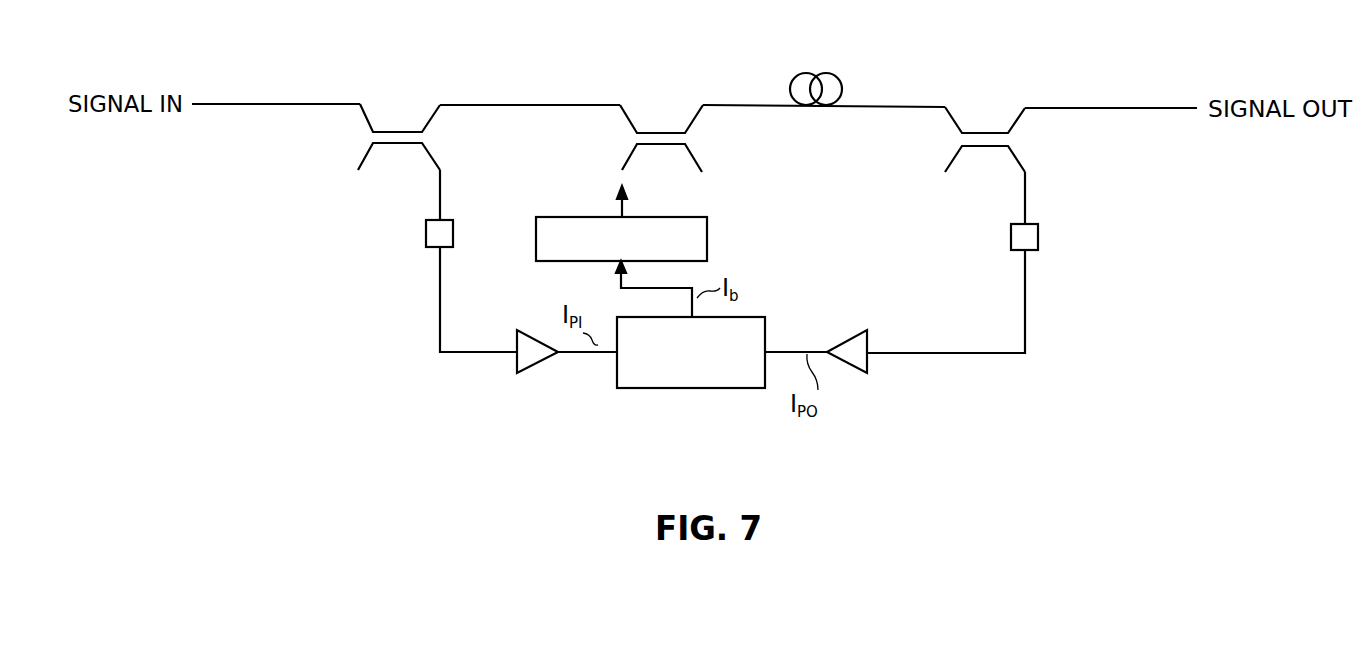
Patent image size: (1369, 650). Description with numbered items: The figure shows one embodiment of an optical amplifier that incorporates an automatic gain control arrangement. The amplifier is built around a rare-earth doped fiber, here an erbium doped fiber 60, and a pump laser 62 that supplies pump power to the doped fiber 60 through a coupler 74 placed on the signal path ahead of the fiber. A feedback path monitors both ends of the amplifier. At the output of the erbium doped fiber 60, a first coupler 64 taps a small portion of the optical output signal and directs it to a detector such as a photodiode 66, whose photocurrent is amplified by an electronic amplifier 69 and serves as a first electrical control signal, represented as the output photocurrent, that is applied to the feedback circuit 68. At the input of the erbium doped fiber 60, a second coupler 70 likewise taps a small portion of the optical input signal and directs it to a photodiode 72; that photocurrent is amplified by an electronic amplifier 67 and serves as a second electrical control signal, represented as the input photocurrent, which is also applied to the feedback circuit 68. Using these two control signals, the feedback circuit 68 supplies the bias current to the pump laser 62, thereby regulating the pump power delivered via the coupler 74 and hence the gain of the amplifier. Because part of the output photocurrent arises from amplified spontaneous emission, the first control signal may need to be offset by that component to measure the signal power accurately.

The erbium doped fiber 60 is at (804, 72).
The pump laser 62 is at (708, 240).
The first coupler 64 is at (987, 133).
The photodiode 66 is at (1039, 238).
The electronic amplifier 67 is at (536, 362).
The feedback circuit 68 is at (687, 389).
The electronic amplifier 69 is at (845, 338).
The second coupler 70 is at (402, 132).
The photodiode 72 is at (426, 232).
The coupler 74 is at (667, 133).